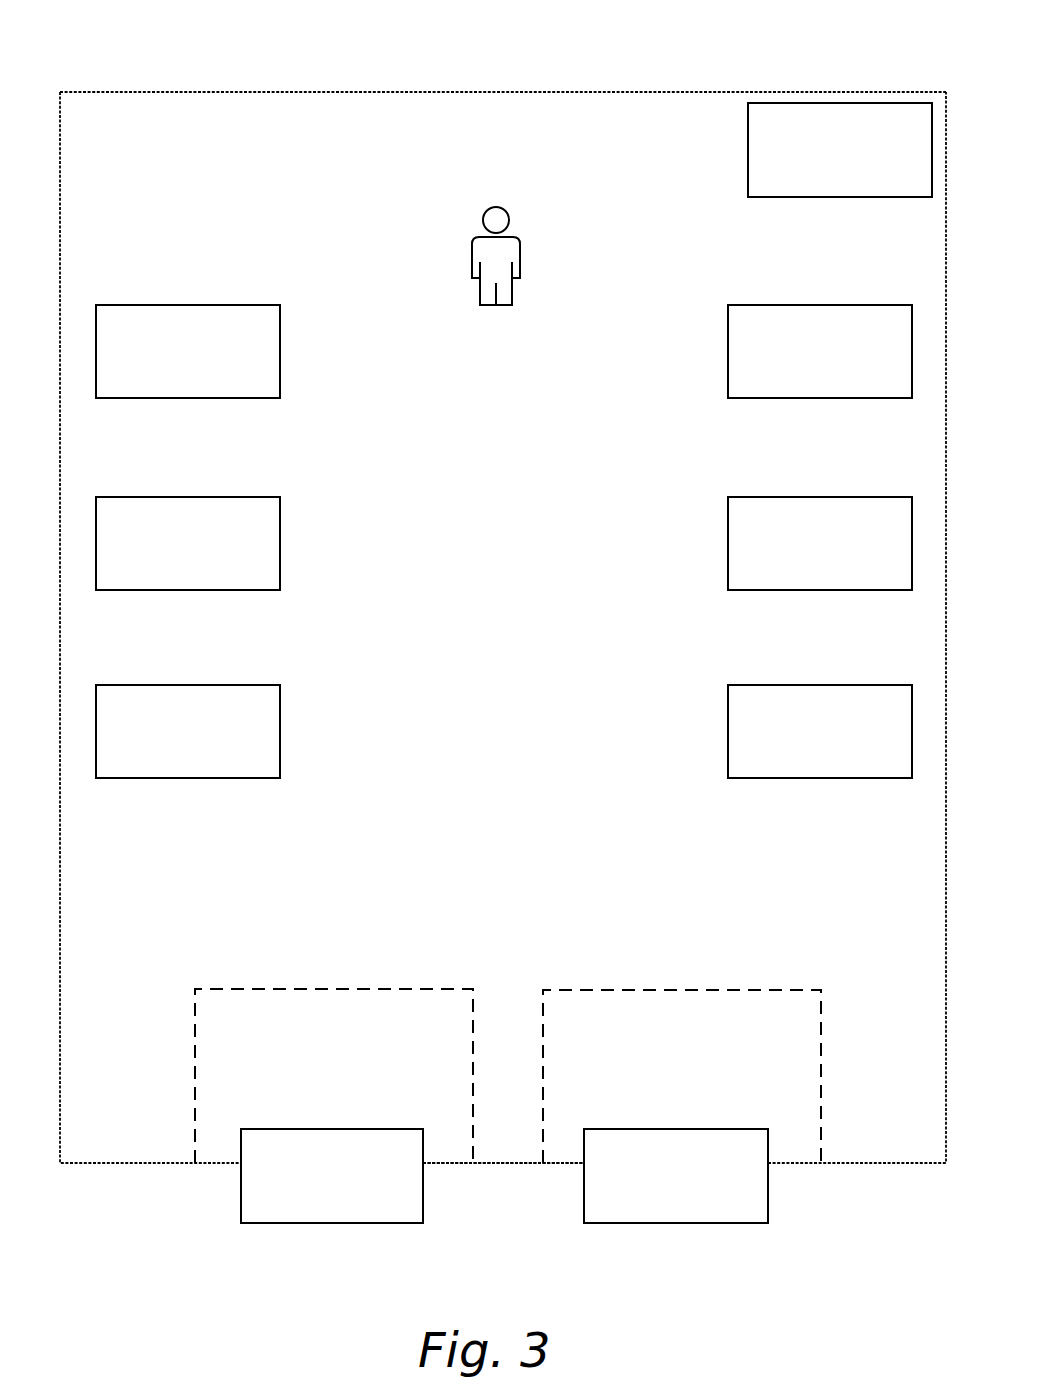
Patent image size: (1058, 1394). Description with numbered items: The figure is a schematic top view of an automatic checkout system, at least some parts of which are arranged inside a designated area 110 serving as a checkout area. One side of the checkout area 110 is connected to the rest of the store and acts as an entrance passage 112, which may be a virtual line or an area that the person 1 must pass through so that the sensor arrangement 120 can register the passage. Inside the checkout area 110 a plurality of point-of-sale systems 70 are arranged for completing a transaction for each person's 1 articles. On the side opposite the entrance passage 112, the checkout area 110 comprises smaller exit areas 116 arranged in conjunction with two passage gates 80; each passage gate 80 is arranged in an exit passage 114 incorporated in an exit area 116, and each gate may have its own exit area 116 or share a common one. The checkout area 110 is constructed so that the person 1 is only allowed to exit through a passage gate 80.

The designated area 110 is at (132, 143).
The entrance passage 112 is at (580, 92).
The sensor arrangement 120 is at (840, 150).
The point-of-sale system 70 is at (504, 541).
The person 1 is at (472, 250).
The exit area 116 is at (442, 1015).
The passage gate 80 is at (504, 1176).
The exit passage 114 is at (509, 1165).